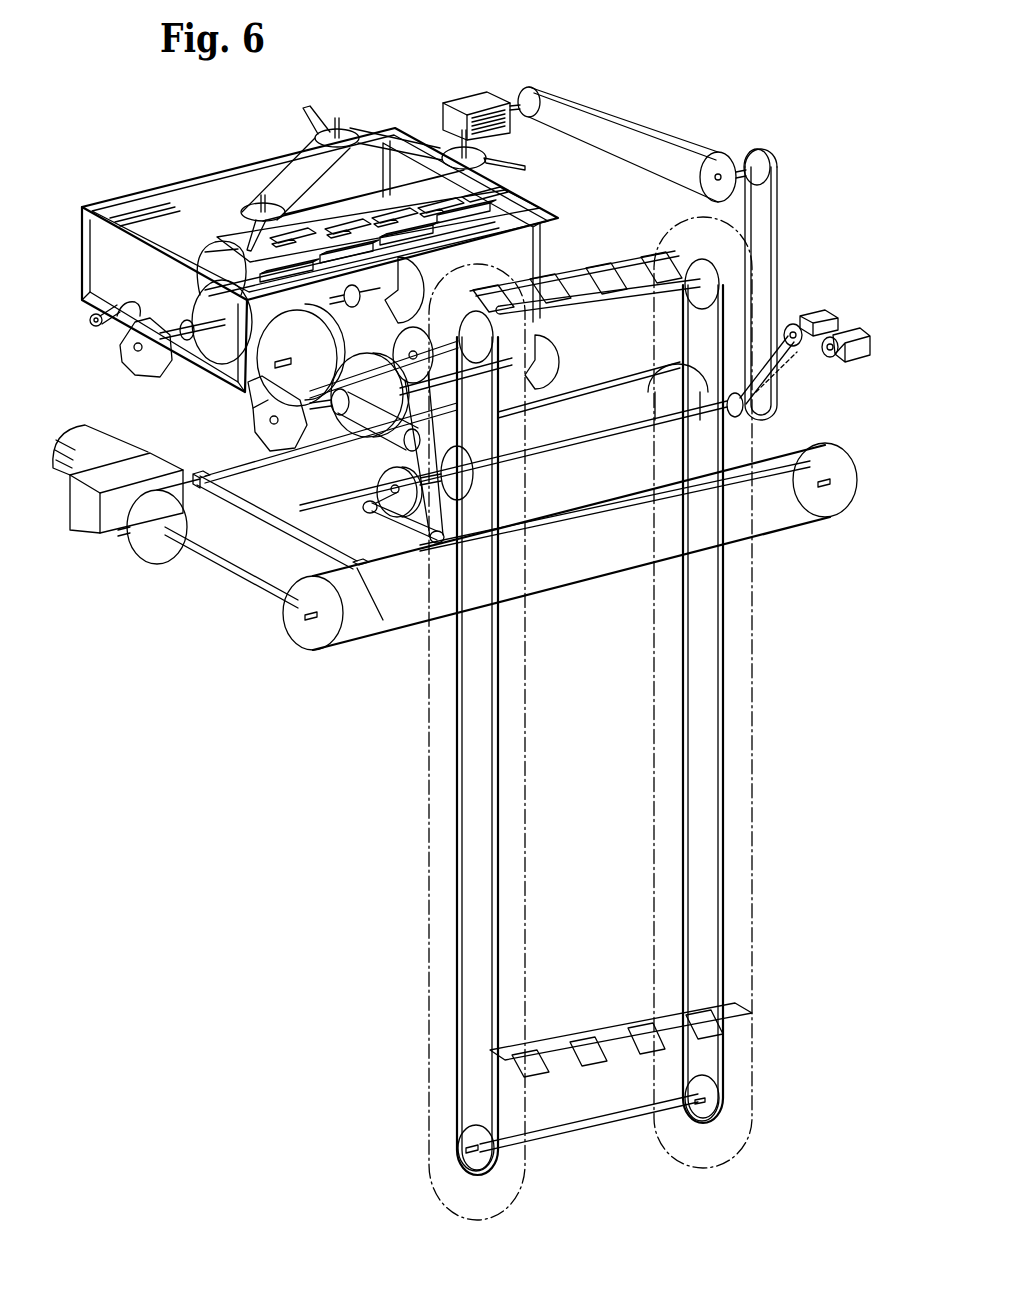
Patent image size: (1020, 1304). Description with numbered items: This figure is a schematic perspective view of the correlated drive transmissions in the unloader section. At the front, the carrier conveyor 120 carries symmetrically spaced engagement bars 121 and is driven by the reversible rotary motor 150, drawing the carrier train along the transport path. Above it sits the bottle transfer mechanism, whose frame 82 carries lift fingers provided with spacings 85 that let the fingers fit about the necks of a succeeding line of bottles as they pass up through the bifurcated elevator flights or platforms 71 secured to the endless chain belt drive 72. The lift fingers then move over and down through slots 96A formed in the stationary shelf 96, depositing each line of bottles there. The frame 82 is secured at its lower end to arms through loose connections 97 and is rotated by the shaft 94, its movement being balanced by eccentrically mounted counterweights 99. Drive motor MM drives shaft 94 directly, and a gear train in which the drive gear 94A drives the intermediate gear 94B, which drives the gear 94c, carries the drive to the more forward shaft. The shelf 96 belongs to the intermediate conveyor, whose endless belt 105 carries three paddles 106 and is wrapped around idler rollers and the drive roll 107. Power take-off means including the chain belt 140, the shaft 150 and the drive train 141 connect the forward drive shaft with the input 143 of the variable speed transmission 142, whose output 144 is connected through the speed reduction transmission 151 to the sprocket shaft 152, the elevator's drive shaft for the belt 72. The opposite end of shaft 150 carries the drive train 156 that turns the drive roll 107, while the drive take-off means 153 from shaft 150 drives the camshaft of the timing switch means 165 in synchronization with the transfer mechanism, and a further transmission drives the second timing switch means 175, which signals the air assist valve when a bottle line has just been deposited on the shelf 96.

The frame 82 is at (114, 207).
The drive motor MM is at (206, 248).
The stationary shelf 96 is at (366, 214).
The slots 96A is at (346, 216).
The paddles 106 is at (320, 112).
The drive roll 107 is at (486, 157).
The endless belt 105 is at (410, 136).
The drive train 156 is at (794, 263).
The drive take-off means 153 is at (793, 372).
The timing switch means 165 is at (820, 315).
The second timing switch means 175 is at (852, 332).
The sprocket shaft 152 is at (614, 305).
The elevator flights or platforms 71 is at (604, 275).
The endless chain belt drive 72 is at (455, 935).
The spacings 85 is at (320, 298).
The speed reduction transmission 151 is at (380, 322).
The chain belt 140 is at (408, 348).
The input 143 is at (387, 401).
The output 144 is at (478, 434).
The shaft 94 is at (178, 325).
The drive gear 94A is at (212, 352).
The intermediate gear 94B is at (262, 386).
The gear 94c is at (345, 434).
The loose connections 97 is at (90, 324).
The eccentrically mounted counterweights 99 is at (122, 362).
The shaft 150 is at (96, 442).
The carrier conveyor 120 is at (216, 458).
The engagement bars 121 is at (268, 520).
The drive train 141 is at (374, 514).
The variable speed transmission 142 is at (378, 472).